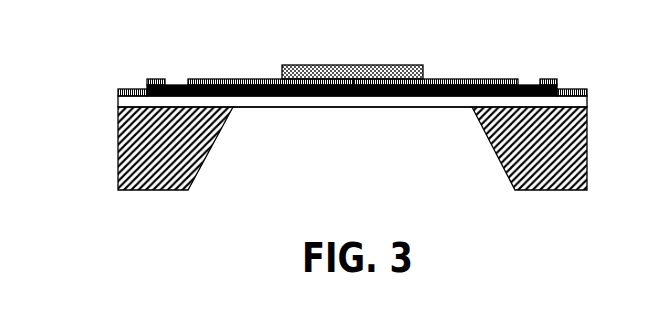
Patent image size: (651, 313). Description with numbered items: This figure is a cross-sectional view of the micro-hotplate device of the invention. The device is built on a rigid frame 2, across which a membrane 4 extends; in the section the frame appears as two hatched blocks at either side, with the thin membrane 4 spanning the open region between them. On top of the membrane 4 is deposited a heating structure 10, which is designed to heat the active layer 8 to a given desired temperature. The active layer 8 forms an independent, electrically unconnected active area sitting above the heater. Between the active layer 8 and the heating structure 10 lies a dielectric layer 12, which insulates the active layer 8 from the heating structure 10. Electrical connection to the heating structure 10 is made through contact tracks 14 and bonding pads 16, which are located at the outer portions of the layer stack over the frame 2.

The rigid frame 2 is at (150, 147).
The membrane 4 is at (342, 108).
The active layer 8 is at (290, 68).
The heating structure 10 is at (365, 66).
The dielectric layer 12 is at (217, 80).
The contact tracks 14 is at (438, 83).
The bonding pads 16 is at (530, 84).